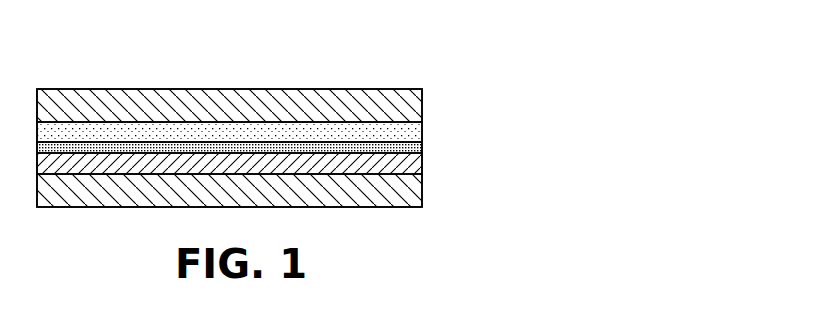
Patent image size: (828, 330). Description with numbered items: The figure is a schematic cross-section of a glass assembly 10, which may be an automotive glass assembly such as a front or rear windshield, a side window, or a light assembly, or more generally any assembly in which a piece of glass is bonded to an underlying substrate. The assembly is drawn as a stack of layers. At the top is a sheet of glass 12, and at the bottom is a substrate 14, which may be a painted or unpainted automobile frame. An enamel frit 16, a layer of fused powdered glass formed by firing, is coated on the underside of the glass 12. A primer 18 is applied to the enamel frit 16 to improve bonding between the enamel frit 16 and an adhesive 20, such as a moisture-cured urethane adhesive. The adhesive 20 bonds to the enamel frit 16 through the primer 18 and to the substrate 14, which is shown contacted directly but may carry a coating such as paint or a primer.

The glass assembly 10 is at (428, 39).
The sheet of glass 12 is at (422, 105).
The substrate 14 is at (422, 190).
The enamel frit 16 is at (422, 130).
The primer 18 is at (422, 147).
The adhesive 20 is at (422, 165).